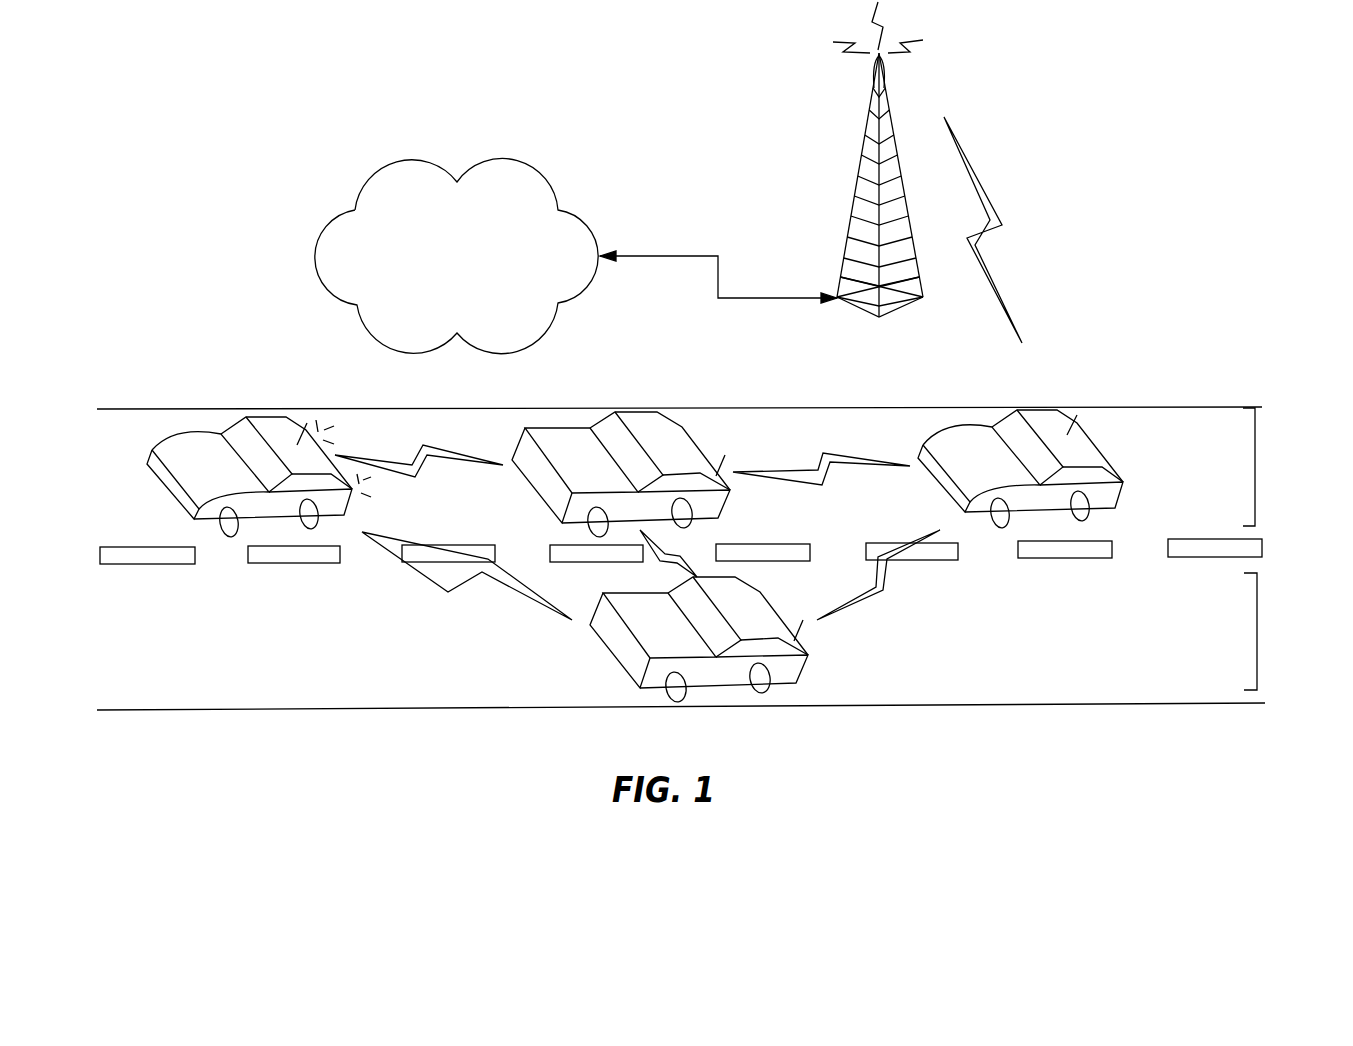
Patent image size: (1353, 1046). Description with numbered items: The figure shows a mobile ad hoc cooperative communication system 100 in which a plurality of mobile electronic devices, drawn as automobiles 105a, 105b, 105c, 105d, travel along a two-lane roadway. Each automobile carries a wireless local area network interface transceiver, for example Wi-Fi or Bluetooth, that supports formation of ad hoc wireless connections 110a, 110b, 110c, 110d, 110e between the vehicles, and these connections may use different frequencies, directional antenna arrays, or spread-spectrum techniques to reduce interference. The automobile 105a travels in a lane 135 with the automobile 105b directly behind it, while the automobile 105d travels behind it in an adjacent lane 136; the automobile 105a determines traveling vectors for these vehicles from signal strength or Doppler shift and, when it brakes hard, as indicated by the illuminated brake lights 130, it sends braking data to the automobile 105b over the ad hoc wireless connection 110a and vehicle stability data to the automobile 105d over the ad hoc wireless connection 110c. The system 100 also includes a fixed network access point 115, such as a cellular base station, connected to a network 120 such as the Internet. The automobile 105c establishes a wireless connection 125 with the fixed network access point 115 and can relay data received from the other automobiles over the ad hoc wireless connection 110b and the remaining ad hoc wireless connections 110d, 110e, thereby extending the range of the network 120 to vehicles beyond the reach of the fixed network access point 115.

The mobile ad hoc cooperative communication system 100 is at (252, 290).
The automobile 105a is at (233, 475).
The automobile 105b is at (601, 466).
The automobile 105c is at (1003, 463).
The automobile 105d is at (679, 630).
The ad hoc wireless connection 110a is at (433, 440).
The ad hoc wireless connection 110b is at (835, 452).
The ad hoc wireless connection 110c is at (390, 542).
The ad hoc wireless connection 110d is at (890, 563).
The ad hoc wireless connection 110e is at (662, 555).
The fixed network access point 115 is at (867, 380).
The network 120 is at (442, 278).
The wireless connection 125 is at (997, 205).
The illuminated brake lights 130 is at (327, 418).
The lane 135 is at (1255, 466).
The adjacent lane 136 is at (1257, 630).